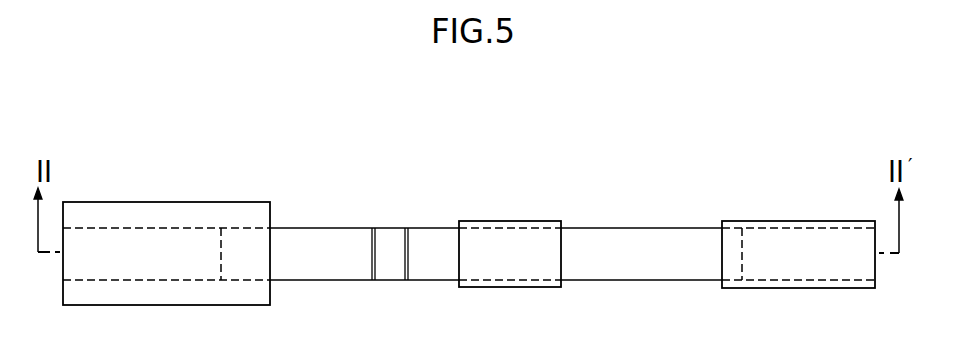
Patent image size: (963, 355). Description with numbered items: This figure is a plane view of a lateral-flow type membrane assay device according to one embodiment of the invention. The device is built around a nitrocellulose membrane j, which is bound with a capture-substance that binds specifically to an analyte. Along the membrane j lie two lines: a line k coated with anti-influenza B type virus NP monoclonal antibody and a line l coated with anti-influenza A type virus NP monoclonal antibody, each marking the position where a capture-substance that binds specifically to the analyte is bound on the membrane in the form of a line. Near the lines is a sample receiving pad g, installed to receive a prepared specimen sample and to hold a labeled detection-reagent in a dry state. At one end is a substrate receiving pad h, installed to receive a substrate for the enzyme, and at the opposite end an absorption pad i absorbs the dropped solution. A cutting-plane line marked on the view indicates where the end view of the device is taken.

The sample receiving pad g is at (505, 243).
The substrate receiving pad h is at (811, 239).
The absorption pad i is at (193, 214).
The nitrocellulose membrane j is at (604, 246).
The line coated with anti-influenza B type virus NP monoclonal antibody k is at (372, 248).
The line coated with anti-influenza A type virus NP monoclonal antibody l is at (410, 248).